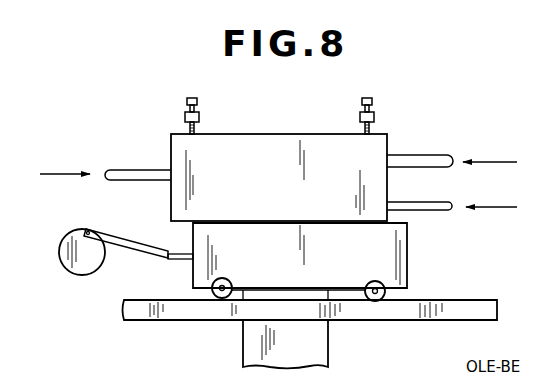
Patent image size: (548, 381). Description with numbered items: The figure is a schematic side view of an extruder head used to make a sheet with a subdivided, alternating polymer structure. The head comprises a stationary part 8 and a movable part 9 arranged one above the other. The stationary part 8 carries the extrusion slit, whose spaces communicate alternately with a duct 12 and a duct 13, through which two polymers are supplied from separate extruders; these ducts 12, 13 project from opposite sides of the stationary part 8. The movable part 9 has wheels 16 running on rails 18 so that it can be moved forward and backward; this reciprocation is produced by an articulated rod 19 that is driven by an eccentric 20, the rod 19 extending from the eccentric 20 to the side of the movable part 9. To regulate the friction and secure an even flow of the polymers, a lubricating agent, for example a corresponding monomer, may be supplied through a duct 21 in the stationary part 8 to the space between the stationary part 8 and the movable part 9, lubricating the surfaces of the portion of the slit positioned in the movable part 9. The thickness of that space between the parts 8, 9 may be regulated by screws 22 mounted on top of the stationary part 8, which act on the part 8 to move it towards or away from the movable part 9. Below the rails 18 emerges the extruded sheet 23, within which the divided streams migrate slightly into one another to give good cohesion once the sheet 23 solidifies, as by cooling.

The stationary part 8 is at (251, 175).
The movable part 9 is at (335, 264).
The duct 12 is at (405, 157).
The duct 13 is at (132, 170).
The wheels 16 is at (228, 280).
The rails 18 is at (213, 309).
The articulated rod 19 is at (138, 244).
The eccentric 20 is at (69, 246).
The duct 21 is at (414, 203).
The screws 22 is at (188, 128).
The extruded sheet 23 is at (313, 341).